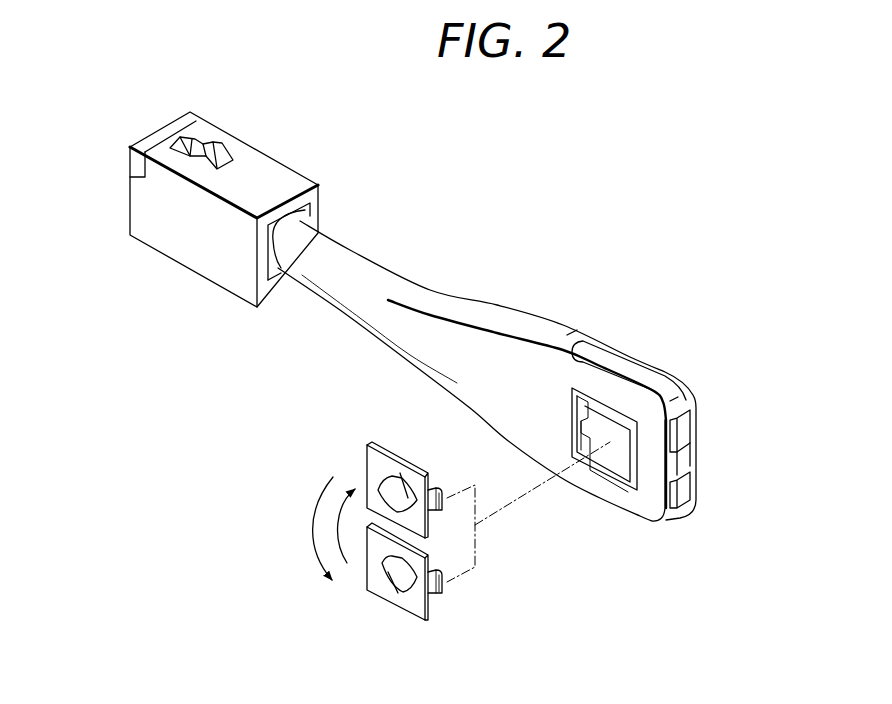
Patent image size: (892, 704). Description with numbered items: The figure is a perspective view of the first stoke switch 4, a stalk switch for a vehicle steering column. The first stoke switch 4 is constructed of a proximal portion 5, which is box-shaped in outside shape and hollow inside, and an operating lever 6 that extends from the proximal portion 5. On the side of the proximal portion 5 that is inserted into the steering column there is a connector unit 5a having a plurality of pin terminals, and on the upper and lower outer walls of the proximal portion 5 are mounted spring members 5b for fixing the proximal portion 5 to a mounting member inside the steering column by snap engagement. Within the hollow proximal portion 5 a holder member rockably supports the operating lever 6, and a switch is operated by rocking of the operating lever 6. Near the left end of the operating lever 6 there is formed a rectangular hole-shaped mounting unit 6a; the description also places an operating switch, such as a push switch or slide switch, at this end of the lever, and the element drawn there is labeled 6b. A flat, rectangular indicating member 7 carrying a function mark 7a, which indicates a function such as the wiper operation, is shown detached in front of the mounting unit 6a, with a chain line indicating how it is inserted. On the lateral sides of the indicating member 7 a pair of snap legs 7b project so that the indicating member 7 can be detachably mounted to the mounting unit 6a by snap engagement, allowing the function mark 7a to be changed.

The first stoke switch 4 is at (410, 294).
The proximal portion 5 is at (182, 164).
The connector unit 5a is at (132, 162).
The spring member 5b is at (203, 146).
The operating lever 6 is at (412, 299).
The mounting unit 6a is at (625, 450).
The latch 6b is at (697, 428).
The indicating member 7 is at (454, 543).
The function mark 7a is at (378, 490).
The snap leg 7b is at (437, 492).